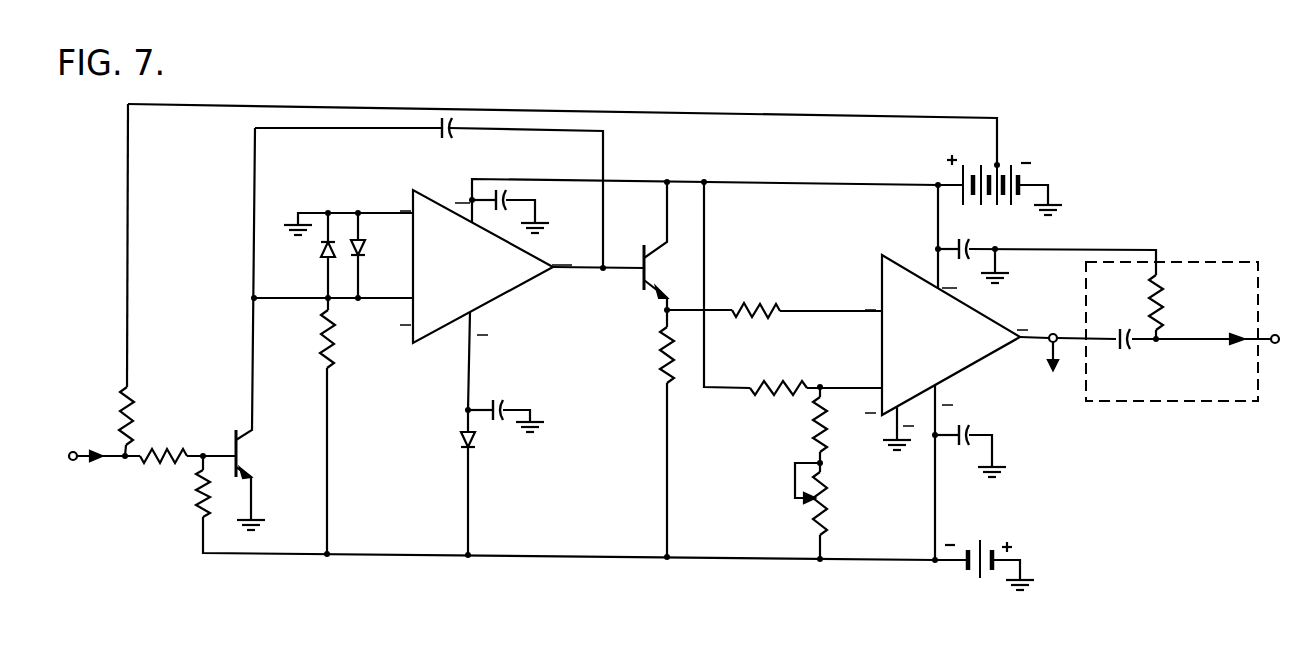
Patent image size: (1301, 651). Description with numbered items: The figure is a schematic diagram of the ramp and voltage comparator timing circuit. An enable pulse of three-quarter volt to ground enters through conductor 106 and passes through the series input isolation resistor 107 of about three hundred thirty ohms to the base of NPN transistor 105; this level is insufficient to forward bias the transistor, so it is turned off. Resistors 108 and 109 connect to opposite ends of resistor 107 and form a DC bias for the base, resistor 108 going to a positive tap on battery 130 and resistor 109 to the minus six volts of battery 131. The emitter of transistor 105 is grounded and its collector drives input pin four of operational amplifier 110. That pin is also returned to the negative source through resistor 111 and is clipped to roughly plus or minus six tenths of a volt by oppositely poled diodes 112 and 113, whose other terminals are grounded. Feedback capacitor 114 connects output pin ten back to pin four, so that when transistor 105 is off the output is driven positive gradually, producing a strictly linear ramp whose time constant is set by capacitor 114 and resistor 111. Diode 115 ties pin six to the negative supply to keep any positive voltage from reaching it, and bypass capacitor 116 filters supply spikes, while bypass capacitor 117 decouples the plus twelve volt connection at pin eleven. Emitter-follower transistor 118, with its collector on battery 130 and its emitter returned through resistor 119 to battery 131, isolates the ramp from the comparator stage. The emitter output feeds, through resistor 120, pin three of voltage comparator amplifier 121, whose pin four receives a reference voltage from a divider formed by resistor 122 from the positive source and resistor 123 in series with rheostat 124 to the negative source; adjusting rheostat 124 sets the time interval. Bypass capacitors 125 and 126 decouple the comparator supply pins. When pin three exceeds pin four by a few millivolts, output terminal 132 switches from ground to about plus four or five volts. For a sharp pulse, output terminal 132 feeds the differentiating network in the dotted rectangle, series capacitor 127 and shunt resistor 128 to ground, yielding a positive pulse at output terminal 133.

The transistor 105 is at (244, 443).
The conductor 106 is at (104, 468).
The resistor 107 is at (188, 445).
The resistor 108 is at (145, 280).
The resistor 109 is at (183, 493).
The operational amplifier 110 is at (487, 263).
The resistor 111 is at (315, 426).
The diode 112 is at (323, 254).
The diode 113 is at (363, 254).
The capacitor 114 is at (428, 139).
The diode 115 is at (462, 445).
The bypass capacitor 116 is at (506, 372).
The bypass capacitor 117 is at (510, 211).
The emitter-follower transistor 118 is at (655, 268).
The resistor 119 is at (659, 357).
The resistor 120 is at (761, 300).
The voltage comparator amplifier 121 is at (946, 341).
The resistor 122 is at (778, 377).
The resistor 123 is at (813, 428).
The rheostat 124 is at (813, 520).
The bypass capacitor 125 is at (974, 252).
The bypass capacitor 126 is at (973, 434).
The series capacitor 127 is at (1144, 347).
The shunt resistor 128 is at (1176, 307).
The battery 130 is at (1000, 168).
The battery 131 is at (984, 545).
The output terminal 132 is at (1036, 353).
The output terminal 133 is at (1276, 330).